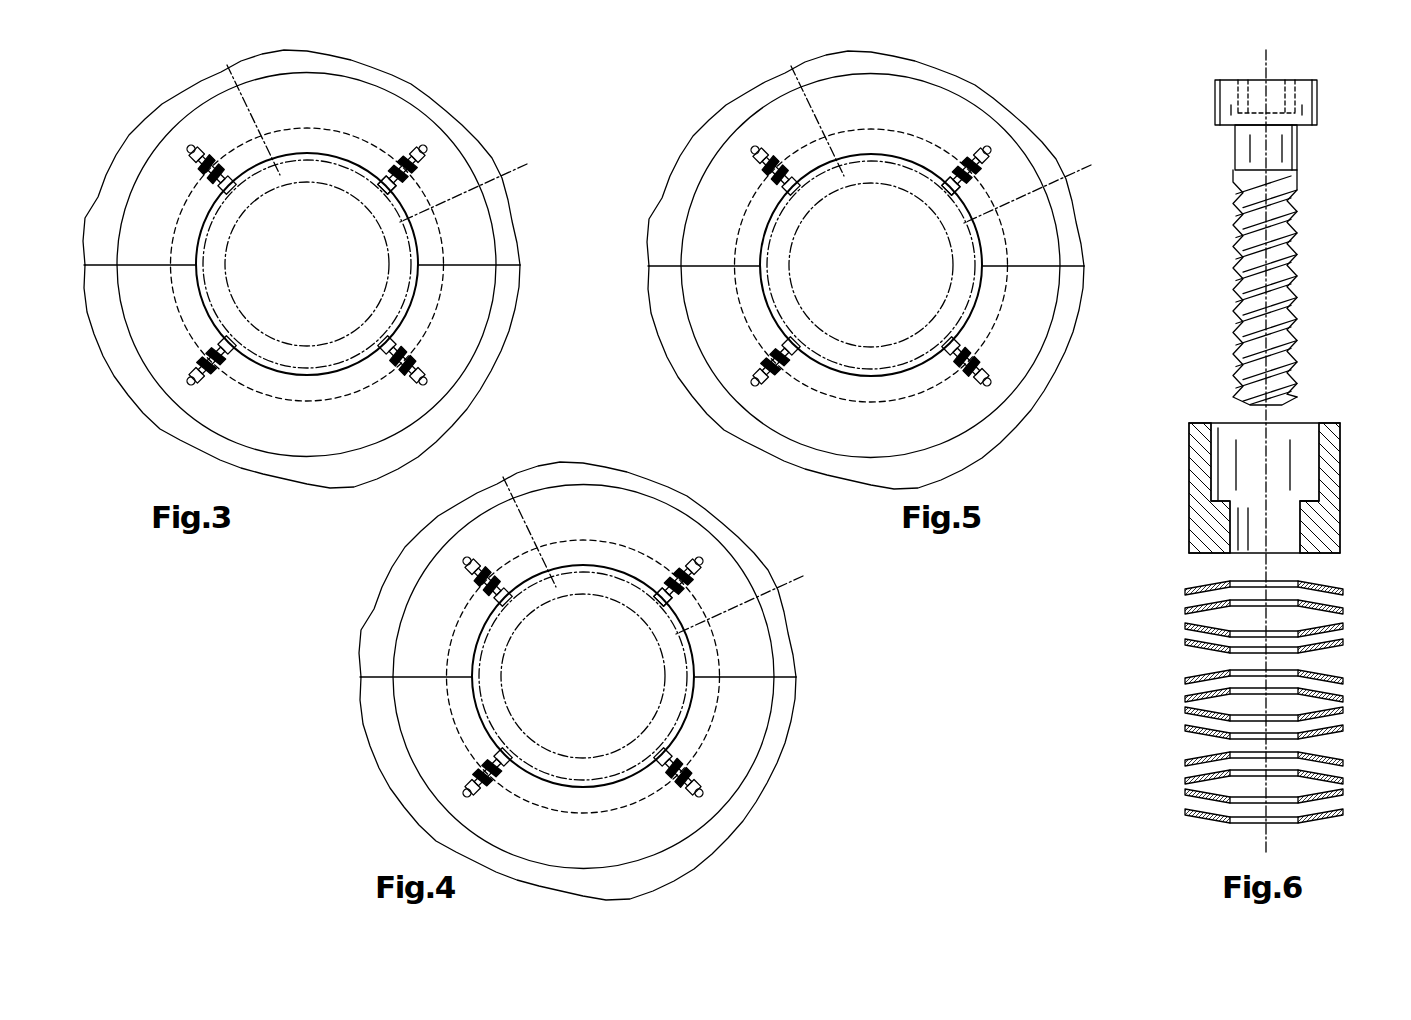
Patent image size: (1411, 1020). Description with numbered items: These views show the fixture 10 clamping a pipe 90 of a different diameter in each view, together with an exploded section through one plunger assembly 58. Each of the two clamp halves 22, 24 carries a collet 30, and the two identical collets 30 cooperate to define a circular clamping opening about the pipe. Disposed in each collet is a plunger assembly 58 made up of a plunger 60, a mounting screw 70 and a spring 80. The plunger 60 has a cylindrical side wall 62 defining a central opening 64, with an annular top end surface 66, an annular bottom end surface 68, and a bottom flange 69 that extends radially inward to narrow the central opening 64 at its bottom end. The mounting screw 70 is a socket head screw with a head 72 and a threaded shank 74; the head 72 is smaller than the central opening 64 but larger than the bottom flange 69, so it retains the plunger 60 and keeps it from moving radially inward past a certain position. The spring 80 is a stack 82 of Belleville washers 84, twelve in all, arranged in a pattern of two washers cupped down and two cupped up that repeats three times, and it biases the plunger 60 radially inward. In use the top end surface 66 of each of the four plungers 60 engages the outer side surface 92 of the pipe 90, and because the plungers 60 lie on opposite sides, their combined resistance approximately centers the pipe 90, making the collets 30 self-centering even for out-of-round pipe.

In FIG. 3, the fixture 10 is at (185, 460).
In FIG. 5, the fixture 10 is at (805, 286).
In FIG. 4, the fixture 10 is at (522, 701).
In FIG. 3, the clamp half 22 is at (464, 140).
In FIG. 5, the clamp half 22 is at (873, 158).
In FIG. 4, the clamp half 22 is at (585, 569).
In FIG. 3, the clamp half 24 is at (493, 343).
In FIG. 5, the clamp half 24 is at (881, 377).
In FIG. 4, the clamp half 24 is at (593, 788).
In FIG. 3, the collet 30 is at (404, 94).
In FIG. 5, the collet 30 is at (887, 248).
In FIG. 4, the collet 30 is at (599, 659).
In FIG. 6, the plunger assembly 58 is at (1110, 653).
In FIG. 3, the plunger 60 is at (387, 187).
In FIG. 5, the plunger 60 is at (871, 266).
In FIG. 4, the plunger 60 is at (583, 677).
In FIG. 6, the plunger 60 is at (1255, 460).
In FIG. 6, the cylindrical side wall 62 is at (1190, 497).
In FIG. 6, the central opening 64 is at (1290, 485).
In FIG. 3, the annular top end surface 66 is at (386, 195).
In FIG. 5, the annular top end surface 66 is at (933, 220).
In FIG. 4, the annular top end surface 66 is at (645, 631).
In FIG. 6, the annular top end surface 66 is at (1330, 422).
In FIG. 6, the annular bottom end surface 68 is at (1325, 557).
In FIG. 6, the bottom flange 69 is at (1308, 500).
In FIG. 6, the mounting screw 70 is at (1279, 242).
In FIG. 6, the head 72 is at (1233, 145).
In FIG. 6, the threaded shank 74 is at (1240, 272).
In FIG. 6, the spring 80 is at (1135, 703).
In FIG. 6, the stack 82 is at (1140, 773).
In FIG. 6, the Belleville washers 84 is at (1233, 702).
In FIG. 3, the pipe 90 is at (227, 65).
In FIG. 5, the pipe 90 is at (806, 104).
In FIG. 4, the pipe 90 is at (518, 515).
In FIG. 3, the outer side surface 92 is at (480, 187).
In FIG. 5, the outer side surface 92 is at (1044, 188).
In FIG. 4, the outer side surface 92 is at (756, 599).